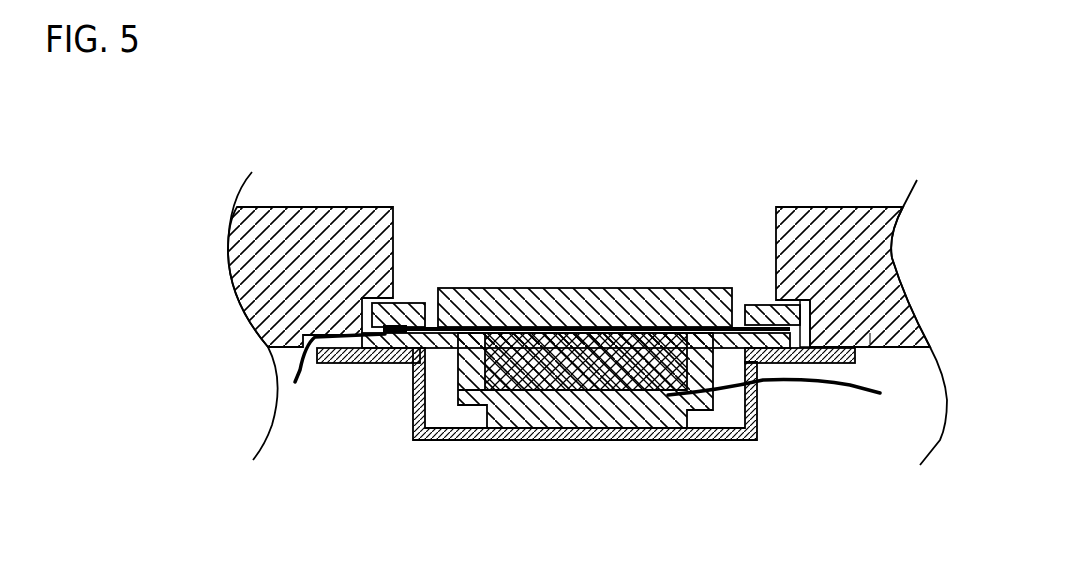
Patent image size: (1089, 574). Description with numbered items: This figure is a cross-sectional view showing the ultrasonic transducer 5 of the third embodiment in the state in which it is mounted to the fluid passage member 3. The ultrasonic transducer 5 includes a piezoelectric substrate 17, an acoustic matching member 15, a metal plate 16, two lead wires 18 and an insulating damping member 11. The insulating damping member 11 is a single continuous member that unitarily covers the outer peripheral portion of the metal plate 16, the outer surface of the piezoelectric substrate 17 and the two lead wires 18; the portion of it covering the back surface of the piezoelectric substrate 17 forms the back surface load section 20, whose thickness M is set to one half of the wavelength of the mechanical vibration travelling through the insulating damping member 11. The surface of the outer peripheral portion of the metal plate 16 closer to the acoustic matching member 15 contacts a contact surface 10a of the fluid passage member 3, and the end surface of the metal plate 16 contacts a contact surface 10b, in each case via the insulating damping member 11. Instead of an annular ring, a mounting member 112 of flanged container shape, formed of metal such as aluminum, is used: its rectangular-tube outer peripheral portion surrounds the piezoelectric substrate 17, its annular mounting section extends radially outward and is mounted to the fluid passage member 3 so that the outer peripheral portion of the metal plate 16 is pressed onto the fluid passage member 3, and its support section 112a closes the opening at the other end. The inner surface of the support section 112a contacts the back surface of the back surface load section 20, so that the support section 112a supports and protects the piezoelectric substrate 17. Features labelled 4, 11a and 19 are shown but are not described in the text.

The fluid passage member 3 is at (892, 258).
The cap 4 is at (690, 240).
The ultrasonic transducer 5 is at (580, 277).
The contact surface 10a is at (770, 300).
The contact surface 10b is at (777, 300).
The insulating damping member 11 is at (650, 417).
The base surface 11a is at (870, 333).
The acoustic matching member 15 is at (510, 280).
The metal plate 16 is at (415, 352).
The piezoelectric substrate 17 is at (460, 407).
The lead wire 18 is at (303, 363).
The adhesive layer 19 is at (435, 325).
The back surface load section 20 is at (607, 420).
The mounting member 112 is at (855, 362).
The support section 112a is at (713, 432).
The thickness of the insulating damping member M is at (573, 410).